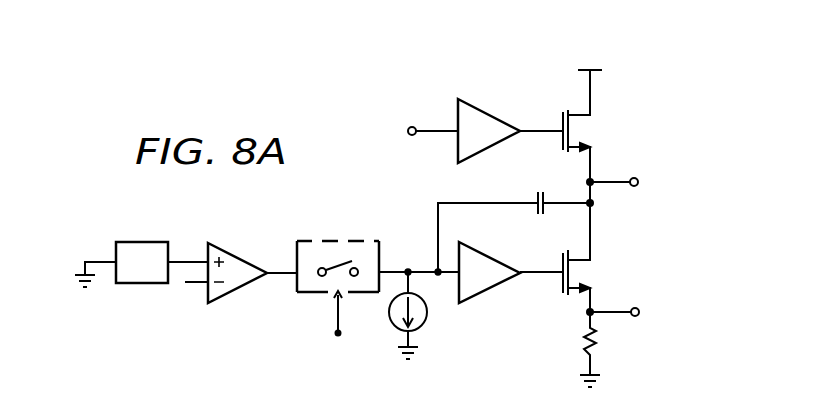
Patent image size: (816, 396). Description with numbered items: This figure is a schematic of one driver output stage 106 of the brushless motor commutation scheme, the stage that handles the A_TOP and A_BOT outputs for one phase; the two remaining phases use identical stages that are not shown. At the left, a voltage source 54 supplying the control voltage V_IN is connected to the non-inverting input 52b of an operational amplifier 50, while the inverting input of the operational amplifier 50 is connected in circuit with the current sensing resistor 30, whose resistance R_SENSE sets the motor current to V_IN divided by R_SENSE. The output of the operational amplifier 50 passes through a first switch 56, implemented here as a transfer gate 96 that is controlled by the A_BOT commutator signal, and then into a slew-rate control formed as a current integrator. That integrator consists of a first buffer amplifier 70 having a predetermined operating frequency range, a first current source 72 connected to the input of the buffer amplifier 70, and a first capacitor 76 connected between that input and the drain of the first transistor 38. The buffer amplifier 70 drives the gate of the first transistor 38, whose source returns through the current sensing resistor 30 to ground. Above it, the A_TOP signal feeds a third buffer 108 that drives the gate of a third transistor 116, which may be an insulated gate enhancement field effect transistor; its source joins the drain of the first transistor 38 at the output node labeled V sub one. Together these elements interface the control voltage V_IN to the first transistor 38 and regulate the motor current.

The voltage source 54 is at (115, 252).
The non-inverting input 52b is at (185, 262).
The operational amplifier 50 is at (207, 296).
The first switch 56 is at (358, 241).
The transfer gate 96 is at (322, 241).
The first current source 72 is at (427, 314).
The first capacitor 76 is at (538, 197).
The first buffer amplifier 70 is at (492, 293).
The first transistor 38 is at (561, 281).
The current sensing resistor 30 is at (595, 345).
The third buffer 108 is at (501, 110).
The third transistor 116 is at (560, 141).
The output stage 106 is at (654, 146).